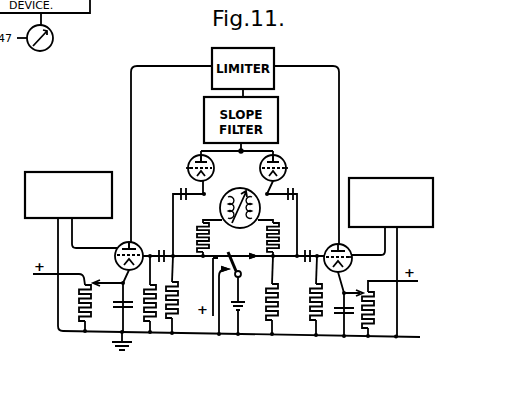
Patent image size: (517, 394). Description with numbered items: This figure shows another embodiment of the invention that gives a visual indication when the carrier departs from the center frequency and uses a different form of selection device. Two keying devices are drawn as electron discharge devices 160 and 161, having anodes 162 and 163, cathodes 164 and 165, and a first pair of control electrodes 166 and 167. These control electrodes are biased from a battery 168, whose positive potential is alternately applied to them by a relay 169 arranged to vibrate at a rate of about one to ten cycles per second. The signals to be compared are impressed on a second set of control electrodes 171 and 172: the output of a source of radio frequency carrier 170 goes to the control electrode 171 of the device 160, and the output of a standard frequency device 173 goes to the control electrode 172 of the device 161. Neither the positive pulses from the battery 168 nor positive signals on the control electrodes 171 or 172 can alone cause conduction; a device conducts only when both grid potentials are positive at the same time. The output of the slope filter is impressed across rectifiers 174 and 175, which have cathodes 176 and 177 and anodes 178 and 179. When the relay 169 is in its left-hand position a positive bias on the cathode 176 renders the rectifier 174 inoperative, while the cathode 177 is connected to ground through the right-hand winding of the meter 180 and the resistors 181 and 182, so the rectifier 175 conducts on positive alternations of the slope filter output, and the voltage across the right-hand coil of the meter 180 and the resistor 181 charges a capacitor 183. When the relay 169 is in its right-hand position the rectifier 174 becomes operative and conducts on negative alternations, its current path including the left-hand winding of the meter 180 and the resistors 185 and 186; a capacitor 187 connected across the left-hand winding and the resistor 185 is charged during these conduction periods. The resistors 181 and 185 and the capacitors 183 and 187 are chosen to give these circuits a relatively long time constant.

The electron discharge device 160 is at (114, 246).
The electron discharge device 161 is at (316, 291).
The anode 162 is at (133, 246).
The anode 163 is at (340, 247).
The cathode 164 is at (124, 263).
The cathode 165 is at (350, 268).
The control electrode 166 is at (118, 255).
The control electrode 167 is at (352, 261).
The battery 168 is at (246, 300).
The relay 169 is at (242, 268).
The source of radio frequency carrier 170 is at (72, 172).
The control electrode 171 is at (143, 251).
The control electrode 172 is at (331, 249).
The standard frequency device 173 is at (388, 178).
The rectifier 174 is at (186, 163).
The rectifier 175 is at (316, 163).
The cathode 176 is at (188, 170).
The cathode 177 is at (287, 170).
The anode 178 is at (199, 156).
The anode 179 is at (278, 158).
The meter 180 is at (237, 189).
The resistor 181 is at (276, 222).
The resistor 182 is at (276, 285).
The capacitor 183 is at (296, 191).
The resistor 185 is at (200, 222).
The resistor 186 is at (174, 284).
The capacitor 187 is at (179, 191).